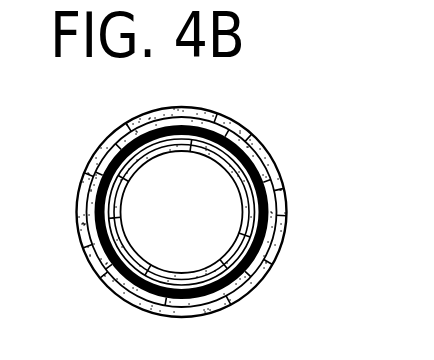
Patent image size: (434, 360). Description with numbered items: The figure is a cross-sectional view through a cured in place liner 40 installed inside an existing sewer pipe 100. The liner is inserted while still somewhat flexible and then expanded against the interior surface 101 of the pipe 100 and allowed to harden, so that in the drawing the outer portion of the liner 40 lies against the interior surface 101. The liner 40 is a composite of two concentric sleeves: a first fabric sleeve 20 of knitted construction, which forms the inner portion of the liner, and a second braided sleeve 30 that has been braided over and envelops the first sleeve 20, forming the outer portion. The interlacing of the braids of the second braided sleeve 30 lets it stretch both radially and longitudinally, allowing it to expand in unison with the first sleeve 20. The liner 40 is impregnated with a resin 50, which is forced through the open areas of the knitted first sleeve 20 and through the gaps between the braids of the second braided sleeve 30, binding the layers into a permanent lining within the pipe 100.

The first fabric sleeve 20 is at (200, 127).
The second braided sleeve 30 is at (171, 124).
The cured in place liner 40 is at (245, 155).
The resin 50 is at (110, 157).
The sewer pipe 100 is at (117, 293).
The interior surface 101 is at (192, 302).